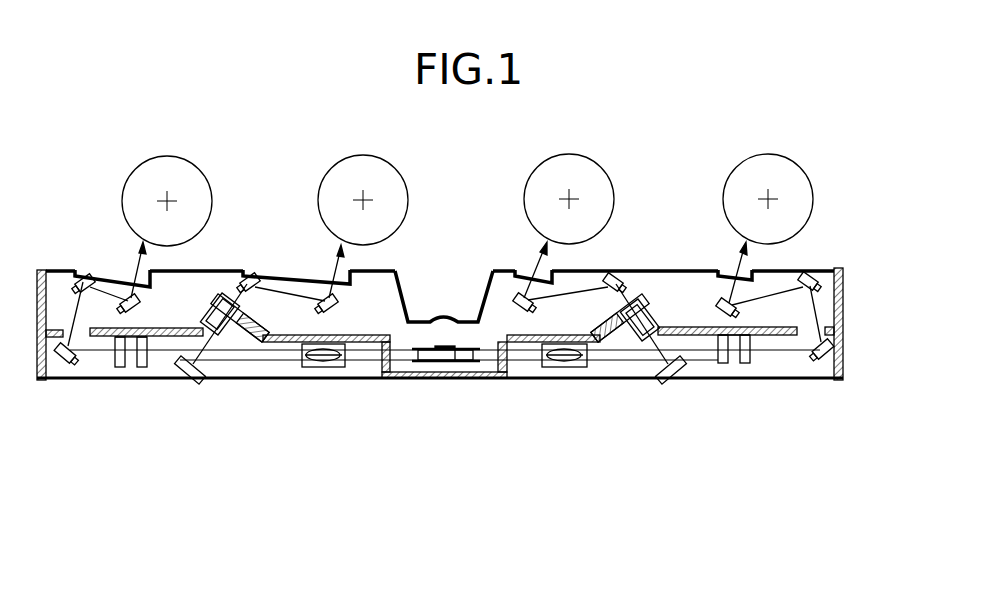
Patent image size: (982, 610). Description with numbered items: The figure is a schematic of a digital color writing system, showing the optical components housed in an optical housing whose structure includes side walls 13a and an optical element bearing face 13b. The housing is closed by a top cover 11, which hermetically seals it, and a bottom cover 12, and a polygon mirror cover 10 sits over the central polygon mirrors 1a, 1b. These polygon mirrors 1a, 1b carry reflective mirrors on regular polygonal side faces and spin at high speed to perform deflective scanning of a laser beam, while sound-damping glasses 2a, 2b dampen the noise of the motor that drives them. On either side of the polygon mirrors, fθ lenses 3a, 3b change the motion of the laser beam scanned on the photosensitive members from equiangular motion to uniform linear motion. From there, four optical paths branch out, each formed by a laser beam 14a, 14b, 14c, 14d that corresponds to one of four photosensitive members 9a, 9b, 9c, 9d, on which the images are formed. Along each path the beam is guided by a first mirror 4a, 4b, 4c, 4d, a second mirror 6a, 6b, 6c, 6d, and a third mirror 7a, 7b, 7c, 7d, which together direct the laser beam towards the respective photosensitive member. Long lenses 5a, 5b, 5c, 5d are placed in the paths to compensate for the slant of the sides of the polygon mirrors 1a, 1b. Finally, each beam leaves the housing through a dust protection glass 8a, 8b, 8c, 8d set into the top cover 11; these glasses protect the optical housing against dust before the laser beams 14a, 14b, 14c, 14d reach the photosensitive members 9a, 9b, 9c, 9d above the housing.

The polygon mirror 1a is at (470, 349).
The polygon mirror 1b is at (404, 358).
The sound-damping glass 2a is at (386, 344).
The sound-damping glass 2b is at (501, 344).
The fθ lens 3a is at (325, 368).
The fθ lens 3b is at (565, 368).
The first mirror 4a is at (67, 362).
The first mirror 4b is at (186, 380).
The first mirror 4c is at (666, 378).
The first mirror 4d is at (838, 352).
The long lens 5a is at (131, 367).
The long lens 5b is at (208, 305).
The long lens 5c is at (648, 292).
The long lens 5d is at (735, 364).
The second mirror 6a is at (80, 276).
The second mirror 6b is at (250, 275).
The second mirror 6c is at (620, 272).
The second mirror 6d is at (814, 272).
The third mirror 7a is at (122, 307).
The third mirror 7b is at (318, 308).
The third mirror 7c is at (538, 307).
The third mirror 7d is at (742, 312).
The dust protection glass 8a is at (123, 271).
The dust protection glass 8b is at (318, 271).
The dust protection glass 8c is at (530, 272).
The dust protection glass 8d is at (725, 268).
The photosensitive member 9a is at (196, 169).
The photosensitive member 9b is at (393, 168).
The photosensitive member 9c is at (598, 168).
The photosensitive member 9d is at (797, 168).
The polygon mirror cover 10 is at (500, 270).
The top cover 11 is at (286, 270).
The bottom cover 12 is at (262, 380).
The side wall 13a is at (843, 296).
The optical element bearing face 13b is at (765, 336).
The laser beam 14a is at (142, 264).
The laser beam 14b is at (344, 262).
The laser beam 14c is at (548, 262).
The laser beam 14d is at (742, 264).